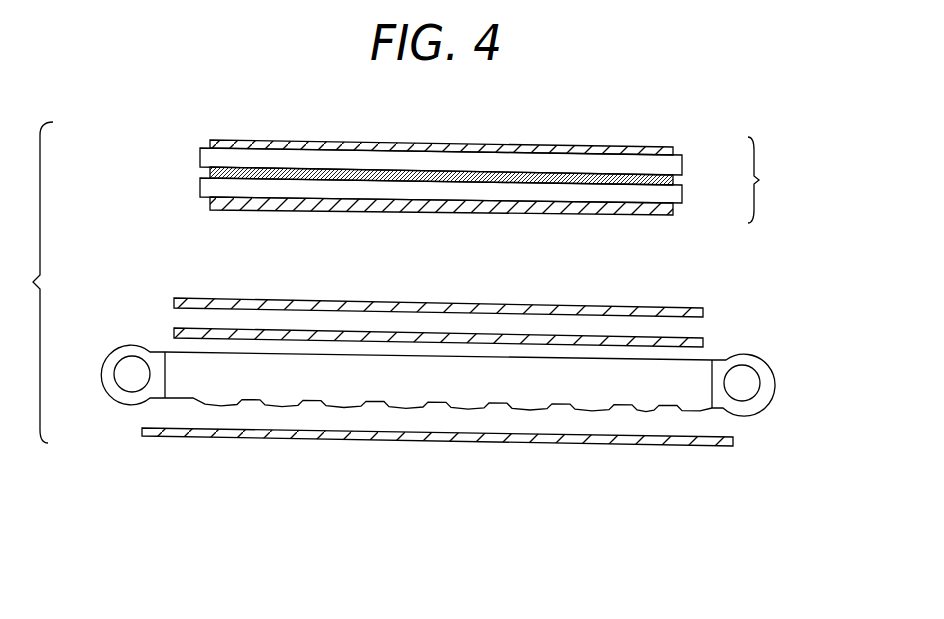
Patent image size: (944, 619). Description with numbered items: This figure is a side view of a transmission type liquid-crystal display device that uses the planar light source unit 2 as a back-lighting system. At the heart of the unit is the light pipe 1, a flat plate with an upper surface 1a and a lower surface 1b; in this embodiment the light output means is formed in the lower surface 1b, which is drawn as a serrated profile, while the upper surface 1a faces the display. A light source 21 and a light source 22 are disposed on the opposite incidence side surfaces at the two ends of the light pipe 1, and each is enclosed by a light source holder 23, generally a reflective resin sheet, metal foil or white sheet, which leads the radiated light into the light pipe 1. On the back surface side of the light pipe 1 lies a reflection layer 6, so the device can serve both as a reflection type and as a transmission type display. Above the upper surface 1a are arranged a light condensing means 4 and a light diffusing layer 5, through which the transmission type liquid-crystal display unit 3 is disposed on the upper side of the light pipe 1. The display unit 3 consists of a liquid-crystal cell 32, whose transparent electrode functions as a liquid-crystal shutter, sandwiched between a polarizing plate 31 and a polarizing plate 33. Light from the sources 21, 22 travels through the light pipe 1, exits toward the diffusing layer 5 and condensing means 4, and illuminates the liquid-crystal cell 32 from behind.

The light pipe 1 is at (443, 394).
The upper surface of light pipe 1a is at (187, 353).
The lower surface of light pipe 1b is at (182, 401).
The planar light source unit 2 is at (117, 299).
The transmission type liquid-crystal display unit 3 is at (489, 182).
The polarizing plate 31 is at (673, 151).
The liquid-crystal cell 32 is at (683, 160).
The polarizing plate 33 is at (673, 209).
The light condensing means 4 is at (703, 312).
The light diffusing layer 5 is at (703, 343).
The reflection layer 6 is at (688, 447).
The light source 21 is at (125, 373).
The light source 22 is at (750, 392).
The light source holder 23 is at (128, 346).